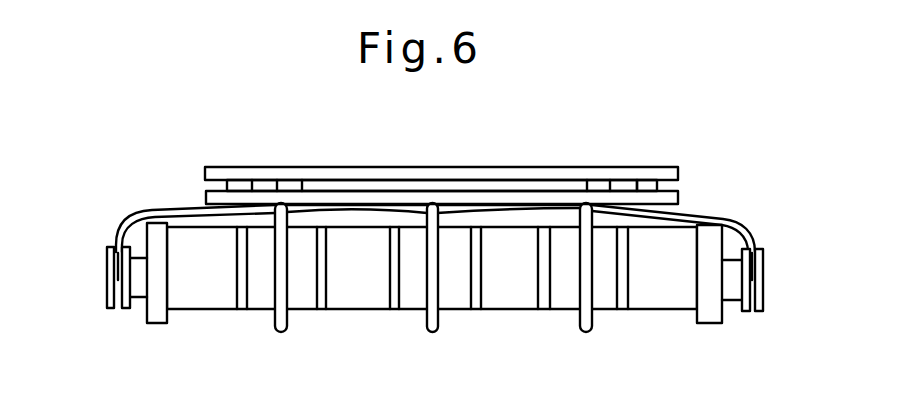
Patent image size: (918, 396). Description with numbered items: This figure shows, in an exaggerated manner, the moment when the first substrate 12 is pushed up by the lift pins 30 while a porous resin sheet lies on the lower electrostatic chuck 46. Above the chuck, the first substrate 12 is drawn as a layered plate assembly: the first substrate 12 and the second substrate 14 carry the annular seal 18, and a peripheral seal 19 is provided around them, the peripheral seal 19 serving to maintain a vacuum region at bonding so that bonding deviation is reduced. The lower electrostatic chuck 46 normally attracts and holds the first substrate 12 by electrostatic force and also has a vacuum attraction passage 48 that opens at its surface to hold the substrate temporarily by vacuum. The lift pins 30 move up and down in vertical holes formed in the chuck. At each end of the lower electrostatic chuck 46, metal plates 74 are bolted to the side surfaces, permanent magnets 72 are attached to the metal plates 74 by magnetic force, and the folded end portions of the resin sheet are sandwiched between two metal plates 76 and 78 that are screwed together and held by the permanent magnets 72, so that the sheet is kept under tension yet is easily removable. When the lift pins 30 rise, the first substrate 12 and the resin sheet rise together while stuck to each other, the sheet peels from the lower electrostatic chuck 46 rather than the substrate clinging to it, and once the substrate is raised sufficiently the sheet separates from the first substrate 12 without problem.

The first substrate 12 is at (543, 198).
The second substrate 14 is at (493, 173).
The annular seal 18 is at (600, 185).
The peripheral seal 19 is at (648, 185).
The lift pins 30 is at (277, 326).
The lower electrostatic chuck 46 is at (662, 302).
The vacuum attraction passage 48 is at (320, 310).
The permanent magnets 72 is at (139, 298).
The metal plates 74 is at (153, 232).
The metal plate 76 is at (125, 309).
The metal plate 78 is at (108, 300).